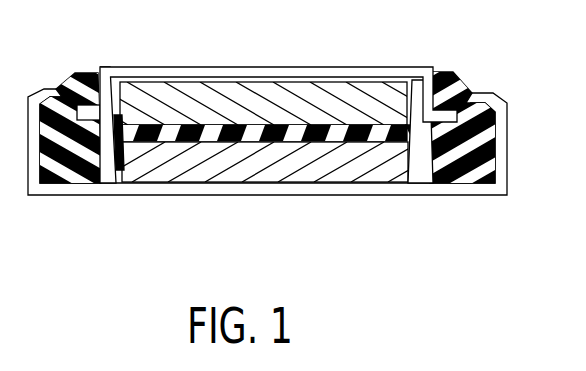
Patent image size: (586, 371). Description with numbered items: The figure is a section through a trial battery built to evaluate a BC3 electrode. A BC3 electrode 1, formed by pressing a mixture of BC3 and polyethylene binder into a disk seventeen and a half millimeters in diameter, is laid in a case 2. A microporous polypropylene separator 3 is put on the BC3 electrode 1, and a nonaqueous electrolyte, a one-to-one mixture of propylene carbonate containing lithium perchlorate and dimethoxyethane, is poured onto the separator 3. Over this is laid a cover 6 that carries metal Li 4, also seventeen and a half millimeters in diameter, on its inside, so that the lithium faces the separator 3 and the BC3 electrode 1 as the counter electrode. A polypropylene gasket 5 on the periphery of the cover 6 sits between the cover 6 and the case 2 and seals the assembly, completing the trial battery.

The BC3 electrode 1 is at (270, 172).
The case 2 is at (504, 172).
The microporous polypropylene separator 3 is at (409, 128).
The metal Li 4 is at (122, 100).
The polypropylene gasket 5 is at (462, 87).
The cover 6 is at (192, 64).